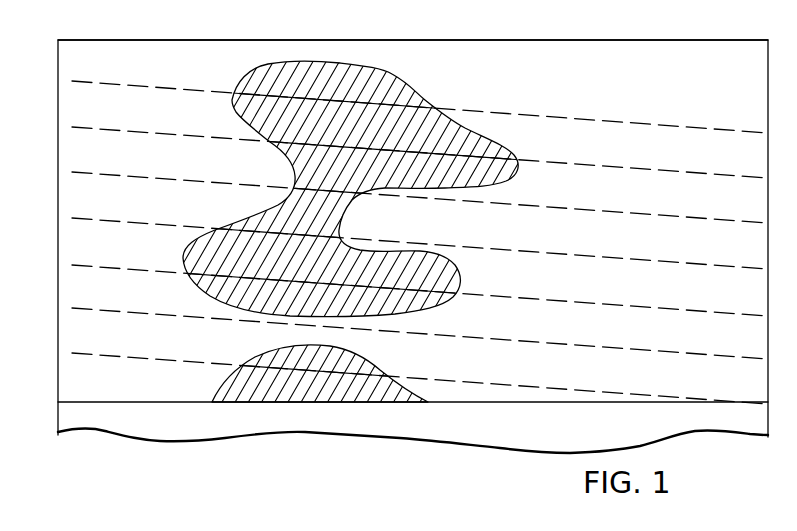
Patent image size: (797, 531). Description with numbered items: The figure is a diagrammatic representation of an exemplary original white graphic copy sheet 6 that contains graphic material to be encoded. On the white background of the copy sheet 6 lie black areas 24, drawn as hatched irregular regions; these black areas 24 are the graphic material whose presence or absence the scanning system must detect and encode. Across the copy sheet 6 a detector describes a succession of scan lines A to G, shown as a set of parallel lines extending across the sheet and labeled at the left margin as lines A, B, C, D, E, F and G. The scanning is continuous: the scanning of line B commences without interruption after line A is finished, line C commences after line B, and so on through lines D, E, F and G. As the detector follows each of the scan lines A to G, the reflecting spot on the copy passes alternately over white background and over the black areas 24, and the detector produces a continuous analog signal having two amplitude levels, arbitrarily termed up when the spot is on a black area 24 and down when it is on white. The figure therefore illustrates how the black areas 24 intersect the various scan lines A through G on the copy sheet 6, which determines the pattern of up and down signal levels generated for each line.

The original white graphic copy sheet 6 is at (565, 39).
The black areas 24 is at (413, 308).
The scan line A is at (72, 81).
The scan line B is at (72, 127).
The scan line C is at (72, 172).
The scan line D is at (72, 218).
The scan line E is at (72, 265).
The scan line F is at (72, 308).
The scan line G is at (72, 353).